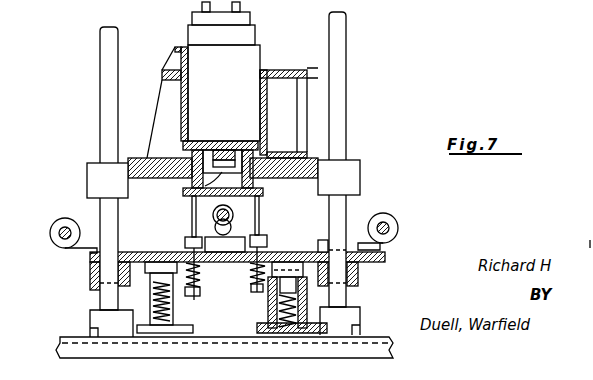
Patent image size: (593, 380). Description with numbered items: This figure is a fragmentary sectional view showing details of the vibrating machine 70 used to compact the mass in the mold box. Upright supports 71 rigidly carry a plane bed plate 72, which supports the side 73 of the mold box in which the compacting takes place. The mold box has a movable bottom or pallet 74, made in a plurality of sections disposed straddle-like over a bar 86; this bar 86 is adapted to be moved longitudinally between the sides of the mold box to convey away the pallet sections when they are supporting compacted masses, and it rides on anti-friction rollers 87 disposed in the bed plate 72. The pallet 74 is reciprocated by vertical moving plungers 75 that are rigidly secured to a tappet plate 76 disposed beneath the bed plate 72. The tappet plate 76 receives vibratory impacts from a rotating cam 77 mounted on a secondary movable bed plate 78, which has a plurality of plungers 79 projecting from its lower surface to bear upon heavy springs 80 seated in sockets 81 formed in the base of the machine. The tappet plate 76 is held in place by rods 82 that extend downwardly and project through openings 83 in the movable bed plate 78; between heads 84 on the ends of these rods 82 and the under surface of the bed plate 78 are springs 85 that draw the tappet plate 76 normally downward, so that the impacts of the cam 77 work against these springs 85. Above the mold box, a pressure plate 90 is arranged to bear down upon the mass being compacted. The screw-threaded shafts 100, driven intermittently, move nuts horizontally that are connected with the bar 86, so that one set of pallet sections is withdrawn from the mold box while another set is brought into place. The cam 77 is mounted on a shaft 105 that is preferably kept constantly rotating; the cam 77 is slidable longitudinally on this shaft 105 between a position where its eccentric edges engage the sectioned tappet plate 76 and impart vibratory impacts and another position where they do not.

The vibrating machine 70 is at (302, 228).
The upright supports 71 is at (100, 88).
The bed plate 72 is at (148, 160).
The side of the mold box 73 is at (268, 118).
The movable bottom or pallet 74 is at (198, 143).
The vertical moving plungers 75 is at (256, 183).
The tappet plate 76 is at (264, 194).
The rotating cam 77 is at (233, 213).
The secondary movable bed plate 78 is at (276, 252).
The plungers 79 is at (280, 289).
The heavy springs 80 is at (279, 312).
The sockets 81 is at (145, 300).
The rods 82 is at (192, 226).
The openings 83 is at (185, 243).
The heads 84 is at (196, 296).
The springs 85 is at (200, 283).
The bar 86 is at (228, 150).
The anti-friction rollers 87 is at (183, 191).
The pressure plate 90 is at (255, 38).
The screw-threaded shafts 100 is at (50, 235).
The shaft 105 is at (213, 214).